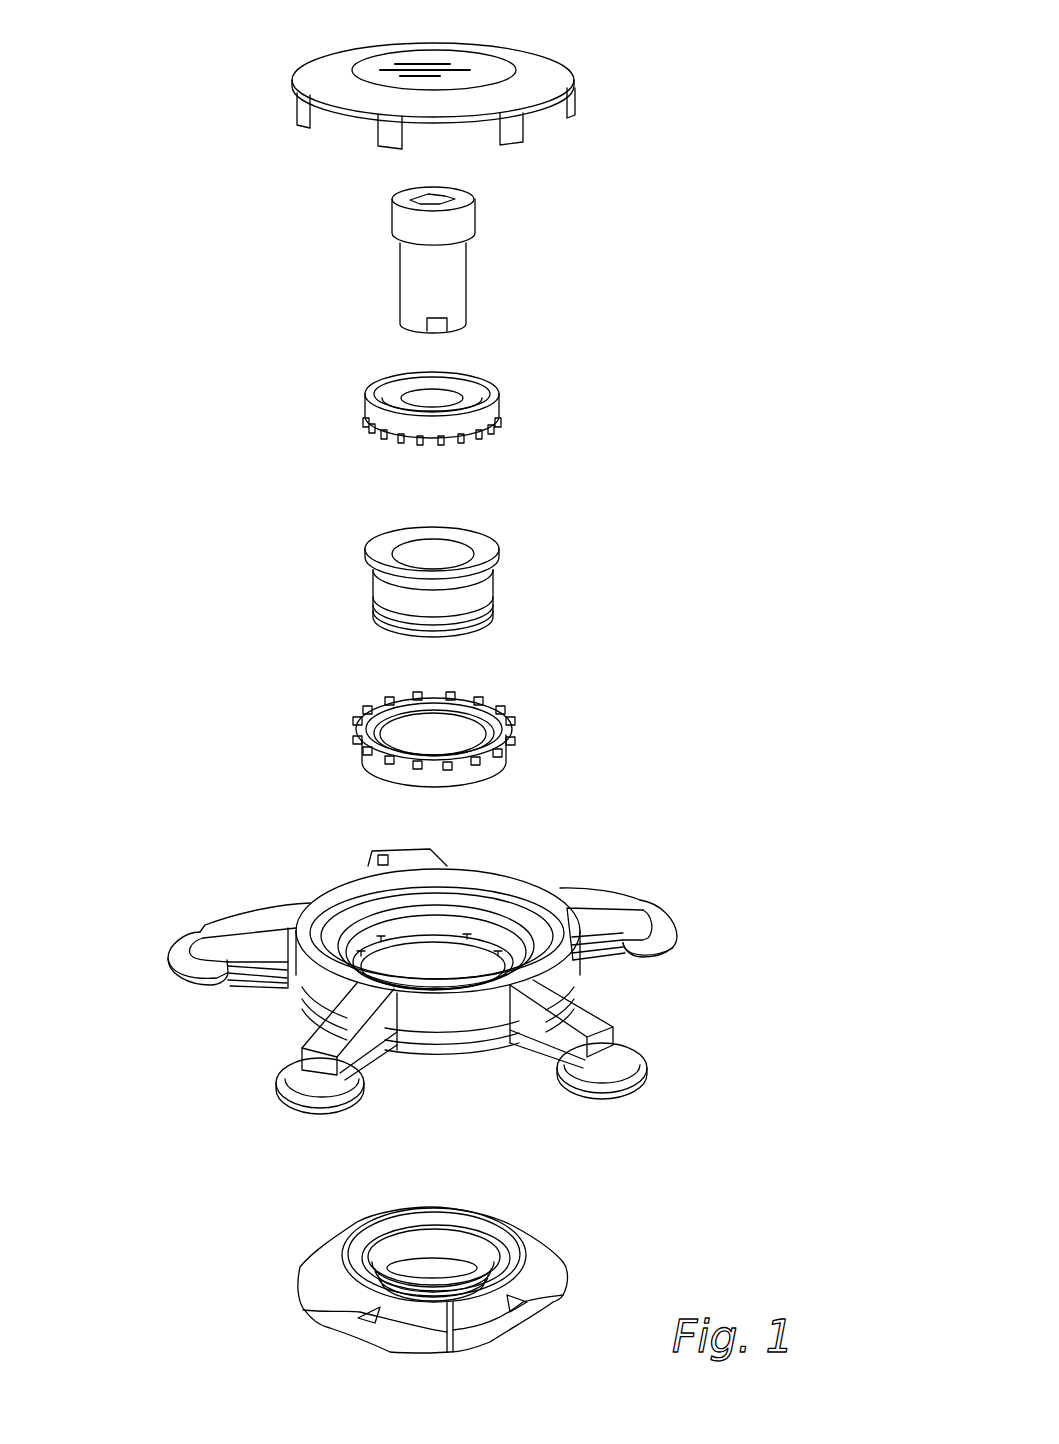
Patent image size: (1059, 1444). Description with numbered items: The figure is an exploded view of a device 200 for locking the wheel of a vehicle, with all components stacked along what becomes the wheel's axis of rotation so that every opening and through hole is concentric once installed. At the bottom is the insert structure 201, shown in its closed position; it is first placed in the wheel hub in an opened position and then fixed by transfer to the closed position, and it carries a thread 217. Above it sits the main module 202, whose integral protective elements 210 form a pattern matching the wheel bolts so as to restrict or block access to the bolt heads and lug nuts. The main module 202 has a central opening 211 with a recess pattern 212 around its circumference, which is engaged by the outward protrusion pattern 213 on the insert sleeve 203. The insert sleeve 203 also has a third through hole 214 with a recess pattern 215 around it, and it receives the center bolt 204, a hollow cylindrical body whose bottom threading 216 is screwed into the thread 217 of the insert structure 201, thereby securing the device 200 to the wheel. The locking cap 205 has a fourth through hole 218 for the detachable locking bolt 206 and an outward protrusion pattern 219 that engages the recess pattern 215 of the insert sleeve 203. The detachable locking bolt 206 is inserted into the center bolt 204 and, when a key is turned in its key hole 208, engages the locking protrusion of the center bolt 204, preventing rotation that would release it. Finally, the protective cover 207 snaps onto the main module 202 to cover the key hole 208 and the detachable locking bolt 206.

The device 200 is at (714, 92).
The insert structure 201 is at (310, 1238).
The main module 202 is at (208, 888).
The insert sleeve 203 is at (498, 762).
The center bolt 204 is at (487, 555).
The locking cap 205 is at (487, 416).
The detachable locking bolt 206 is at (447, 273).
The protective cover 207 is at (540, 68).
The key hole 208 is at (400, 195).
The protective elements 210 is at (660, 936).
The opening 211 is at (448, 948).
The recess pattern 212 is at (383, 948).
The outward protrusion pattern 213 is at (345, 740).
The third through hole 214 is at (432, 745).
The recess pattern 215 is at (470, 710).
The bottom threading 216 is at (373, 605).
The thread 217 is at (423, 1245).
The fourth through hole 218 is at (433, 405).
The outward protrusion pattern 219 is at (365, 426).